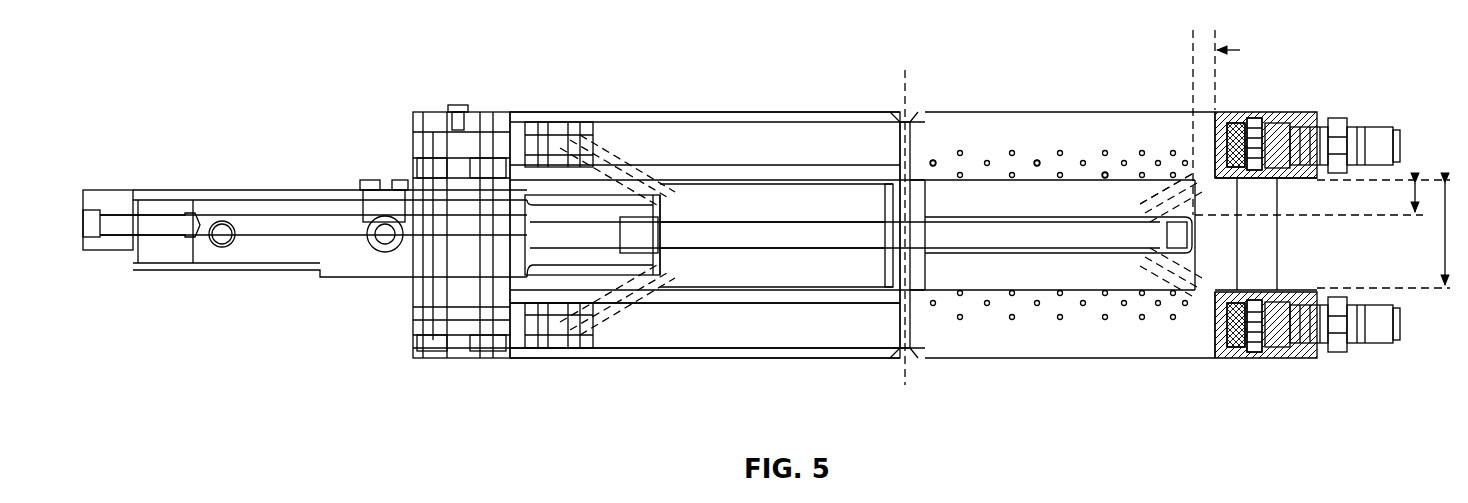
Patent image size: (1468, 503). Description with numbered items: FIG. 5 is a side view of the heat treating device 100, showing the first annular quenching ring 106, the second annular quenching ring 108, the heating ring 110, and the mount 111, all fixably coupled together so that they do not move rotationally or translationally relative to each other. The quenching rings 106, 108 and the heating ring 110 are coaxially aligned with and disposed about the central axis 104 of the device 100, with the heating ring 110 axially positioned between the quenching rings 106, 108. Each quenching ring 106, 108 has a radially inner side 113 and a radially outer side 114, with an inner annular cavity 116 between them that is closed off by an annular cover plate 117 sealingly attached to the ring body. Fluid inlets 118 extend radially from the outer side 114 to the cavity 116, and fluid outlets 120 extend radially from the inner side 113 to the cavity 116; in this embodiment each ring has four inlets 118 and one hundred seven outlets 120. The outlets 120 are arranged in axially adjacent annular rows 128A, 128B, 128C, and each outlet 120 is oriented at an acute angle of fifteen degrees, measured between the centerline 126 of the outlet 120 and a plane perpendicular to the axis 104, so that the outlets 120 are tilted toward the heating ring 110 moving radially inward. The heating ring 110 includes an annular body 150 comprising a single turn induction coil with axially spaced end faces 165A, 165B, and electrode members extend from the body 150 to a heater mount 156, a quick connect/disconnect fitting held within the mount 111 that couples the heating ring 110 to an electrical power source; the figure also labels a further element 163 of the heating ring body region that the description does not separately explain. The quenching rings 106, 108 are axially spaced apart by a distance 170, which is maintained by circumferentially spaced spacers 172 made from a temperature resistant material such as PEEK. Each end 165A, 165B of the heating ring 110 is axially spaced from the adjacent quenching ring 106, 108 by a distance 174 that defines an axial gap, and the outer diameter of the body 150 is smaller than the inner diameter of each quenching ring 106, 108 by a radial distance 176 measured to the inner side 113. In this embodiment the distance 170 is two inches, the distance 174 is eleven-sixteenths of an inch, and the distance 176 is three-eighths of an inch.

The heat treating device 100 is at (232, 77).
The central axis 104 is at (935, 73).
The first annular quenching ring 106 is at (797, 122).
The second annular quenching ring 108 is at (665, 327).
The heating ring 110 is at (700, 237).
The mount 111 is at (427, 110).
The radially inner side 113 is at (978, 347).
The radially outer side 114 is at (690, 143).
The inner annular cavity 116 is at (1240, 127).
The annular cover plate 117 is at (1278, 110).
The fluid inlets 118 is at (1297, 110).
The fluid outlets 120 is at (960, 153).
The centerline 126 is at (1153, 188).
The annular row 128A is at (933, 163).
The annular row 128B is at (1037, 162).
The annular row 128C is at (1107, 183).
The annular body 150 is at (855, 233).
The heater mount 156 is at (235, 190).
The piston head 163 is at (752, 237).
The end face 165A is at (785, 212).
The end face 165B is at (717, 257).
The axial distance 170 is at (1445, 237).
The spacers 172 is at (925, 262).
The axial distance 174 is at (1415, 200).
The radial distance 176 is at (1240, 50).